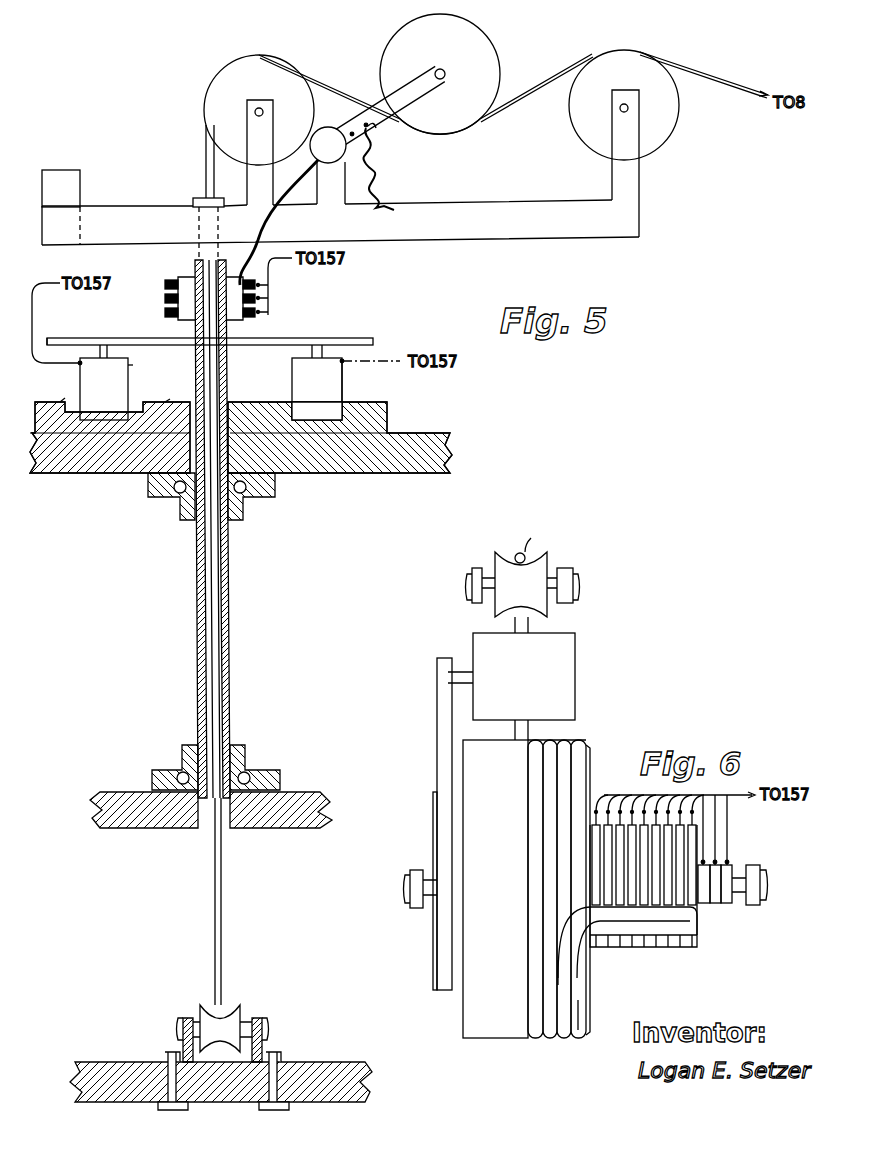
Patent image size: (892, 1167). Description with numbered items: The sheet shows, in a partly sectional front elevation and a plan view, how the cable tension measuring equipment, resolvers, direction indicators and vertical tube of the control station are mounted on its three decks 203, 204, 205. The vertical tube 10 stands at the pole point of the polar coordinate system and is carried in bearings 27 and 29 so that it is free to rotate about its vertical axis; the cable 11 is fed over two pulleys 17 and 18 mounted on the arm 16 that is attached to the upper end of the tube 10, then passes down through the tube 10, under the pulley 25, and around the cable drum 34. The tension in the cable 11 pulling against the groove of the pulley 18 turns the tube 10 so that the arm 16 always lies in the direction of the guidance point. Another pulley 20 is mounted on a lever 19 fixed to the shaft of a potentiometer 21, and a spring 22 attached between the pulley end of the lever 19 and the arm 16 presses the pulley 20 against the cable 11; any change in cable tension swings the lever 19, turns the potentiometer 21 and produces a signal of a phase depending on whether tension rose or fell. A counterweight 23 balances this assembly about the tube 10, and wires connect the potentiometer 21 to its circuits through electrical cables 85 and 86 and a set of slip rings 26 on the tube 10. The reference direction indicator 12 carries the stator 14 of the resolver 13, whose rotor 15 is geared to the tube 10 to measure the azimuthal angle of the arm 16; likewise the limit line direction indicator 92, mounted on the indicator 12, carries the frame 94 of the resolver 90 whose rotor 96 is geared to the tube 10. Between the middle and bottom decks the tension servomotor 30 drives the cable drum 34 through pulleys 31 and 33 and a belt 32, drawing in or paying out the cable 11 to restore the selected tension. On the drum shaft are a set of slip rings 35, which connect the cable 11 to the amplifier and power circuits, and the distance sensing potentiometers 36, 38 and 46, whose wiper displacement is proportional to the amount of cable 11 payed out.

In FIG. 5, the vertical tube 10 is at (225, 529).
In FIG. 5, the cable 11 is at (316, 76).
In FIG. 6, the cable 11 is at (578, 738).
In FIG. 5, the reference direction indicator 12 is at (174, 380).
In FIG. 5, the resolver 13 is at (345, 366).
In FIG. 5, the stator 14 is at (317, 381).
In FIG. 5, the rotor 15 is at (336, 338).
In FIG. 5, the arm 16 is at (340, 222).
In FIG. 5, the pulley 17 is at (259, 110).
In FIG. 5, the pulley 18 is at (624, 143).
In FIG. 5, the lever 19 is at (377, 130).
In FIG. 5, the pulley 20 is at (411, 83).
In FIG. 5, the potentiometer 21 is at (339, 163).
In FIG. 5, the spring 22 is at (387, 159).
In FIG. 5, the counterweight 23 is at (61, 207).
In FIG. 5, the pulley 25 is at (228, 1025).
In FIG. 6, the pulley 25 is at (523, 584).
In FIG. 5, the slip rings 26 is at (182, 275).
In FIG. 5, the bearing 27 is at (221, 764).
In FIG. 5, the bearing 29 is at (216, 498).
In FIG. 6, the tension servomotor 30 is at (524, 668).
In FIG. 6, the pulley 31 is at (436, 681).
In FIG. 6, the belt 32 is at (426, 824).
In FIG. 6, the pulley 33 is at (433, 803).
In FIG. 6, the cable drum 34 is at (495, 879).
In FIG. 6, the slip rings 35 is at (672, 885).
In FIG. 6, the distance sensing potentiometer 36 is at (728, 903).
In FIG. 6, the distance sensing potentiometer 38 is at (704, 903).
In FIG. 6, the distance sensing potentiometer 46 is at (716, 903).
In FIG. 5, the electrical cable 85 is at (277, 166).
In FIG. 5, the electrical cable 86 is at (274, 284).
In FIG. 5, the resolver 90 is at (141, 364).
In FIG. 5, the limit line direction indicator 92 is at (62, 400).
In FIG. 5, the frame 94 is at (104, 382).
In FIG. 5, the rotor 96 is at (83, 338).
In FIG. 5, the deck 203 is at (241, 437).
In FIG. 5, the deck 204 is at (211, 823).
In FIG. 5, the deck 205 is at (221, 1070).